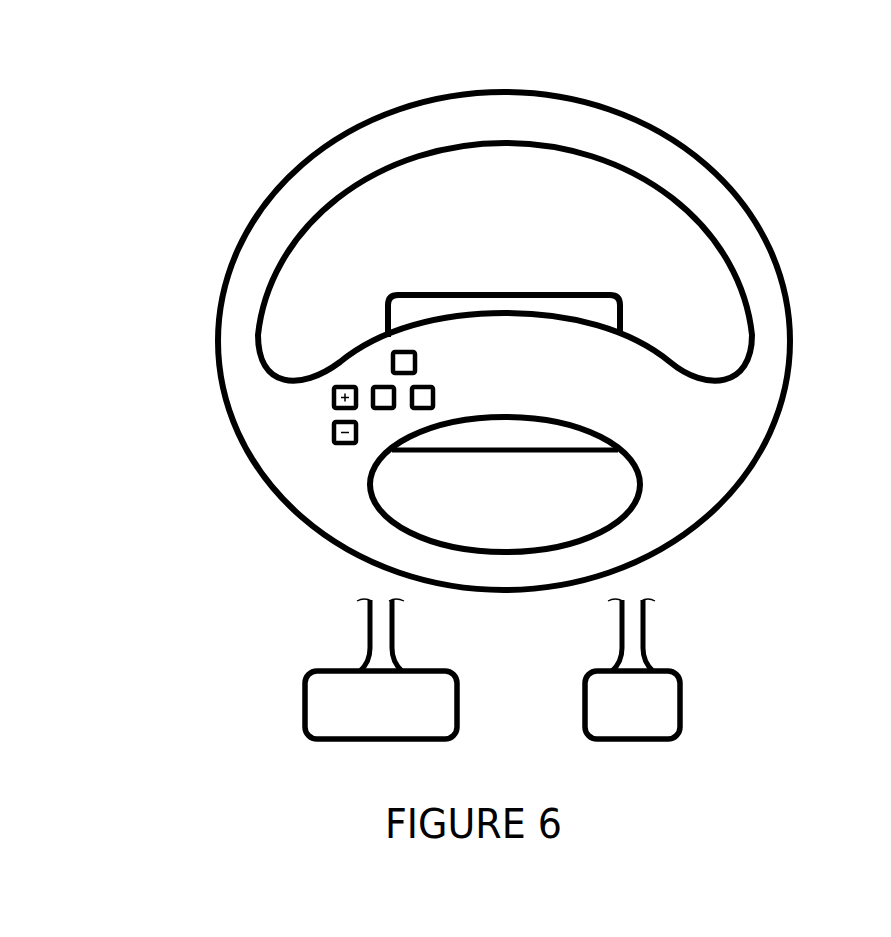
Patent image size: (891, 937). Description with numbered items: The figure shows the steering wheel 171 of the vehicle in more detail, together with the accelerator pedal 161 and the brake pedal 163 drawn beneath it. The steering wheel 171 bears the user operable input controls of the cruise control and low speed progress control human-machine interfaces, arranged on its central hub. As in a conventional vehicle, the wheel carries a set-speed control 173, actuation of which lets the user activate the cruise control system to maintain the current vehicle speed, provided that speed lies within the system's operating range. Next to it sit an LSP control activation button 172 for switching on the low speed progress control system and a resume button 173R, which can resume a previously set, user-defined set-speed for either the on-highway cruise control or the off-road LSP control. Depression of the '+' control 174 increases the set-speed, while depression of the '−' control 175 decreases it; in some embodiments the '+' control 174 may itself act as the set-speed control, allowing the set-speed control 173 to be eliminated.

The steering wheel 171 is at (764, 291).
The LSP control activation button 172 is at (407, 352).
The set-speed control 173 is at (373, 390).
The resume button 173R is at (422, 408).
The '+' control 174 is at (334, 394).
The '−' control 175 is at (334, 435).
The brake pedal 163 is at (322, 698).
The accelerator pedal 161 is at (660, 698).